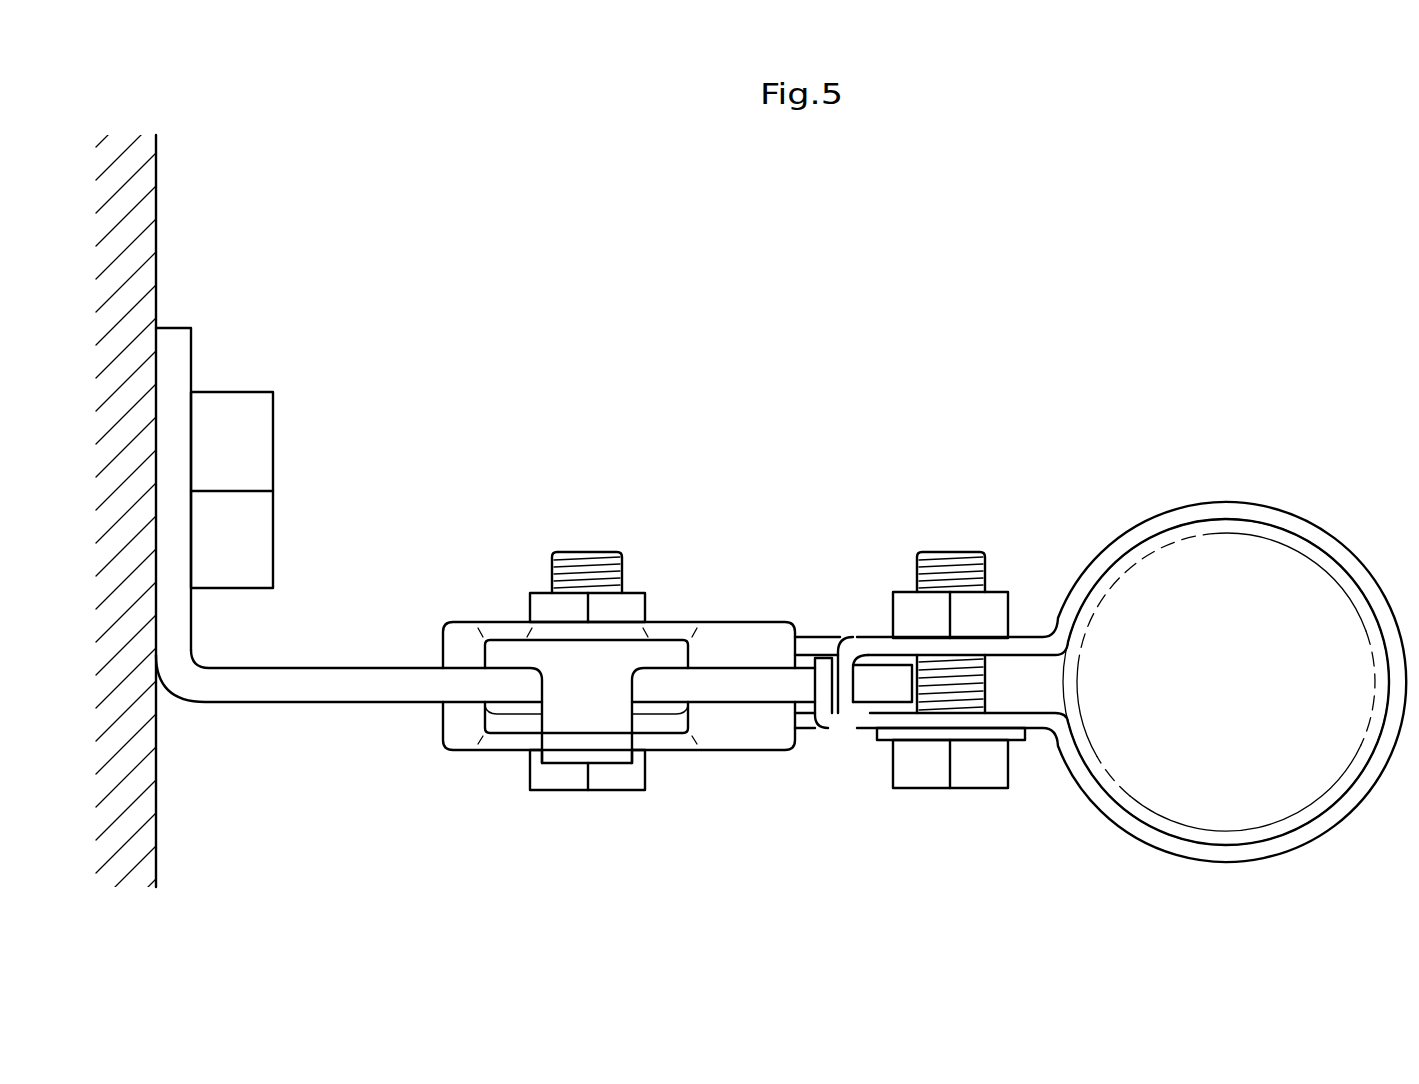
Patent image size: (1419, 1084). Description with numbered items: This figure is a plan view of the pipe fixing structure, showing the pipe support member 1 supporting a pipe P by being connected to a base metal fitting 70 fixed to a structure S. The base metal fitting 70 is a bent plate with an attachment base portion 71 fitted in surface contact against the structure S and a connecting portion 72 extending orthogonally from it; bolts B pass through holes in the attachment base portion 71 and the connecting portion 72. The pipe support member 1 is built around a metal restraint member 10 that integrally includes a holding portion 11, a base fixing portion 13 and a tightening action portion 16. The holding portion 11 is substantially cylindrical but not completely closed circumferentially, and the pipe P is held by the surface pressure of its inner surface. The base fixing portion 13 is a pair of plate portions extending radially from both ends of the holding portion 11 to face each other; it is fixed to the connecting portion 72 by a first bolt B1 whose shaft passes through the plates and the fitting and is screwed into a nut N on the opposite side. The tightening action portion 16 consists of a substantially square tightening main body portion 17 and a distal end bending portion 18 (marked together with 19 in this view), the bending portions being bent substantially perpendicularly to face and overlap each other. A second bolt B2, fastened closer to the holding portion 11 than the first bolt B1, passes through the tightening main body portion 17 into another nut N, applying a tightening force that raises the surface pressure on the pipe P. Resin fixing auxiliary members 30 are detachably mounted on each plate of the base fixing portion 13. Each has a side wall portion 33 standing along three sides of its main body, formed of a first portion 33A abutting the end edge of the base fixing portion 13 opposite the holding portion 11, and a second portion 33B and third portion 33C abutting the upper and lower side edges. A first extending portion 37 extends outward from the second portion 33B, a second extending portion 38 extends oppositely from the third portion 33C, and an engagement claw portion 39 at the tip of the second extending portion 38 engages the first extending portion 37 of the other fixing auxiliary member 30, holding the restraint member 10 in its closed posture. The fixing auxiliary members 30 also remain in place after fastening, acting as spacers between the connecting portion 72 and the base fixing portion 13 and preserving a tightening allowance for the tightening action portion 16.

The pipe support member 1 is at (930, 270).
The restraint member 10 is at (1082, 654).
The holding portion 11 is at (1318, 830).
The base fixing portion 13 is at (808, 648).
The tightening action portion 16 is at (835, 691).
The tightening main body portion 17 is at (877, 645).
The distal end bending portion 18 is at (804, 688).
The hook portion 19 is at (823, 693).
The fixing auxiliary member 30 is at (664, 681).
The side wall portion 33 is at (487, 688).
The first portion 33A is at (455, 657).
The second portion 33B is at (515, 745).
The third portion 33C is at (507, 628).
The first extending portion 37 is at (668, 724).
The second extending portion 38 is at (658, 650).
The engagement claw portion 39 is at (607, 753).
The base metal fitting 70 is at (485, 557).
The attachment base portion 71 is at (193, 358).
The connecting portion 72 is at (284, 704).
The bolt B is at (275, 442).
The first bolt B1 is at (565, 783).
The second bolt B2 is at (968, 778).
The nut N is at (527, 608).
The structure S is at (156, 218).
The pipe P is at (1306, 590).